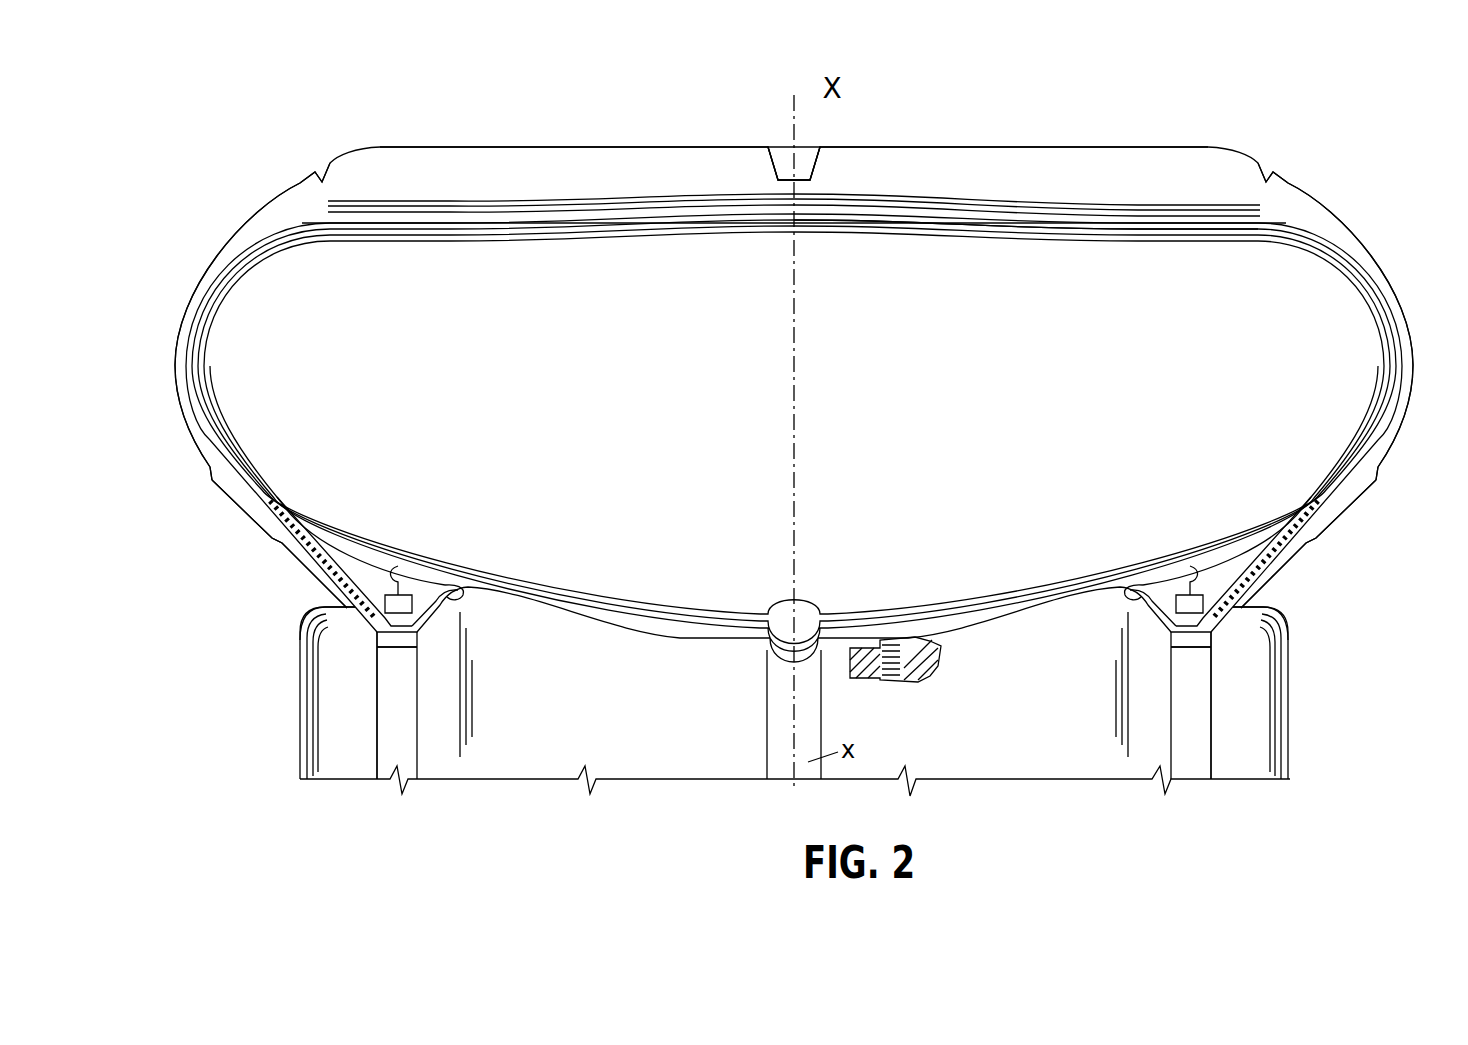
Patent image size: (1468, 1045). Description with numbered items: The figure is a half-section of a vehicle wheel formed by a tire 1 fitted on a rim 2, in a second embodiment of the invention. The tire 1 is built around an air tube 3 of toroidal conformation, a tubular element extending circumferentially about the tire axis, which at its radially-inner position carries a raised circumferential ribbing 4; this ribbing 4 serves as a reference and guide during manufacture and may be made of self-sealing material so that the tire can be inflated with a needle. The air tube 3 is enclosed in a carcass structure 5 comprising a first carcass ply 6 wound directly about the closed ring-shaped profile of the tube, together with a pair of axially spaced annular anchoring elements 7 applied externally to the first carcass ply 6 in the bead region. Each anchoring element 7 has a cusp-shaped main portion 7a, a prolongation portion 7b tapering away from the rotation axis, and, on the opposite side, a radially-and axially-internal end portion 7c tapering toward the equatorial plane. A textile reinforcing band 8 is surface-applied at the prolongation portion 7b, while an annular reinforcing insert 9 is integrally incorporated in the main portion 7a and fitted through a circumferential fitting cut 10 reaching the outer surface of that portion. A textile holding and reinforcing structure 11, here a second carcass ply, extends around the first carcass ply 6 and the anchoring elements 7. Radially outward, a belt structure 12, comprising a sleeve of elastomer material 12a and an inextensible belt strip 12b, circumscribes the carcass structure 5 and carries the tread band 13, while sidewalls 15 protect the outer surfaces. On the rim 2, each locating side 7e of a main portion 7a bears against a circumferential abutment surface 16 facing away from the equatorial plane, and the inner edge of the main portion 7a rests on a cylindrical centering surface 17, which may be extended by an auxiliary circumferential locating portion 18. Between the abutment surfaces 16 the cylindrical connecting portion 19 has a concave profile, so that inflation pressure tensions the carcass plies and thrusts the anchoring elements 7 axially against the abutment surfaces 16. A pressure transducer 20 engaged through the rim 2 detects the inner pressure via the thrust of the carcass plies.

The tire 1 is at (1366, 138).
The rim 2 is at (1287, 727).
The air tube 3 is at (1040, 240).
The circumferential ribbing 4 is at (790, 600).
The carcass structure 5 is at (302, 224).
The first carcass ply 6 is at (252, 260).
The annular anchoring element 7 is at (343, 534).
The main portion 7a is at (393, 622).
The prolongation portion 7b is at (280, 515).
The radially-and axially-internal end portion 7c is at (437, 580).
The locating side 7e is at (463, 583).
The textile reinforcing band 8 is at (300, 565).
The annular reinforcing insert 9 is at (345, 608).
The circumferential fitting cut 10 is at (388, 566).
The textile holding and reinforcing structure 11 is at (206, 440).
The belt structure 12 is at (495, 209).
The sleeve of elastomer material 12a is at (828, 205).
The inextensible belt strip 12b is at (692, 200).
The tread band 13 is at (620, 168).
The sidewall 15 is at (217, 270).
The circumferential abutment surface 16 is at (447, 610).
The cylindrical centering surface 17 is at (387, 723).
The auxiliary circumferential locating portion 18 is at (300, 665).
The cylindrical connecting portion 19 is at (665, 735).
The pressure transducer 20 is at (900, 652).